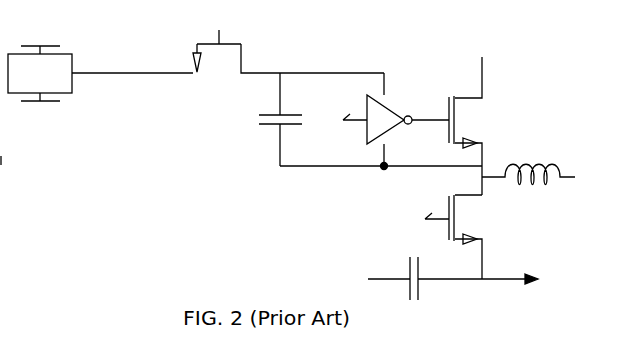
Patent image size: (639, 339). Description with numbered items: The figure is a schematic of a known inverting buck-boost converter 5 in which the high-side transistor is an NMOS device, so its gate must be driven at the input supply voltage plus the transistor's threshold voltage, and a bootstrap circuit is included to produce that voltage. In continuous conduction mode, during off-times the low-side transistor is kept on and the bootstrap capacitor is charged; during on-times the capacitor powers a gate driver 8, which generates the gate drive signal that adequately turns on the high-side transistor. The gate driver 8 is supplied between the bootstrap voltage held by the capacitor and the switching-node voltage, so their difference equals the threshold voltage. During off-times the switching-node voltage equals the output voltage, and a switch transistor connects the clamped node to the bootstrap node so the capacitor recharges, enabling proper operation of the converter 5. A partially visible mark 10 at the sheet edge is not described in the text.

The inverting buck-boost converter 5 is at (186, 190).
The gate driver 8 is at (389, 127).
The circuit (partially visible at sheet edge) 10 is at (3, 161).